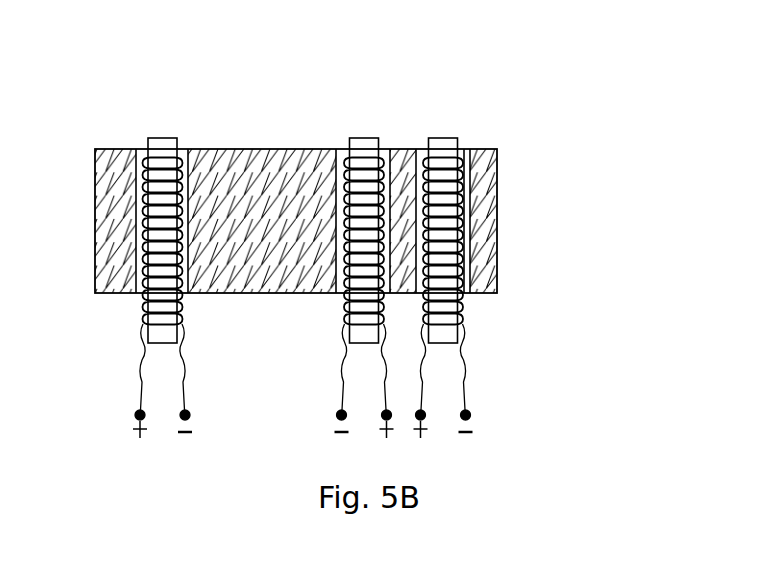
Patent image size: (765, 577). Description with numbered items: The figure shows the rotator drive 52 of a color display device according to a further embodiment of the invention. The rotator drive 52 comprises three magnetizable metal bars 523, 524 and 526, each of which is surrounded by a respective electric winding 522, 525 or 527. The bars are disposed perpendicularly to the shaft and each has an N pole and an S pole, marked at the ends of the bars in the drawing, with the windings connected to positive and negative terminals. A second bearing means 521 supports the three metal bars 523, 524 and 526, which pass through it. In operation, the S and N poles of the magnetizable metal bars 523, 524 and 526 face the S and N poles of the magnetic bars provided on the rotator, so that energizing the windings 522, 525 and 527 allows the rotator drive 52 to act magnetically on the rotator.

The rotator drive 52 is at (503, 280).
The second bearing means 521 is at (480, 210).
The electric winding 522 is at (465, 150).
The magnetizable metal bar 523 is at (445, 147).
The magnetizable metal bar 524 is at (367, 147).
The electric winding 525 is at (337, 150).
The magnetizable metal bar 526 is at (162, 148).
The electric winding 527 is at (137, 157).